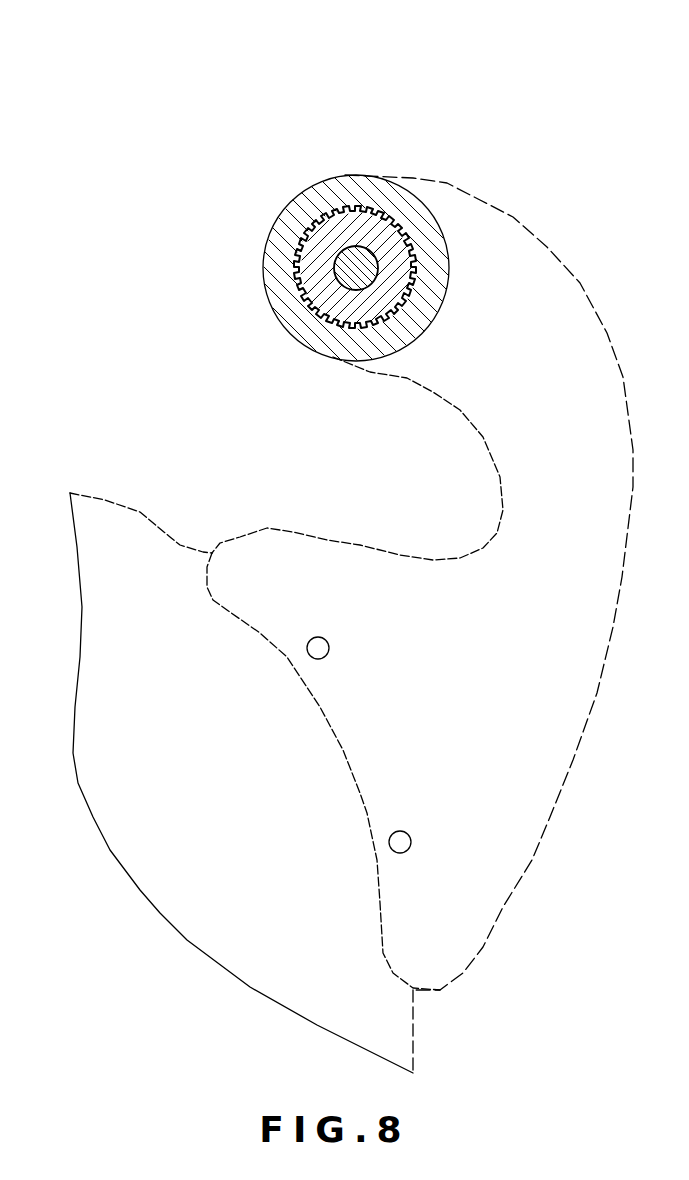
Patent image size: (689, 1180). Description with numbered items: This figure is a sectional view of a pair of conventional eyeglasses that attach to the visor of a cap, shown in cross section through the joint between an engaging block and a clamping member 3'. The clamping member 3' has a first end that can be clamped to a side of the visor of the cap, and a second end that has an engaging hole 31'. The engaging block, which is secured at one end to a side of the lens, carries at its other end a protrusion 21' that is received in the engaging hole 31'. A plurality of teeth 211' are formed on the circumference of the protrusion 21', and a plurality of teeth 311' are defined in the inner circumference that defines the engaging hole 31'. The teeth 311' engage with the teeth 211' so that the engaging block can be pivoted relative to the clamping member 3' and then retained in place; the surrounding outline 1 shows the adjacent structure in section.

The hook body 1 is at (107, 497).
The clamping member 3' is at (311, 198).
The teeth 311' is at (331, 182).
The engaging hole 31' is at (356, 179).
The protrusion 21' is at (377, 163).
The teeth 211' is at (392, 198).